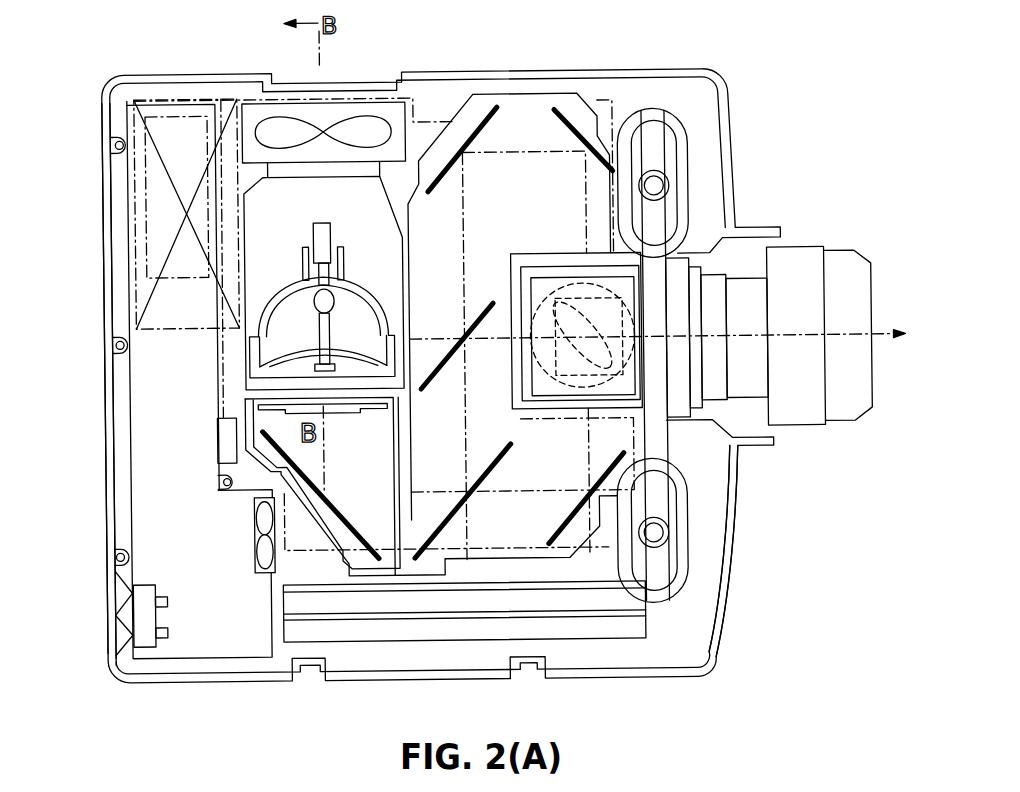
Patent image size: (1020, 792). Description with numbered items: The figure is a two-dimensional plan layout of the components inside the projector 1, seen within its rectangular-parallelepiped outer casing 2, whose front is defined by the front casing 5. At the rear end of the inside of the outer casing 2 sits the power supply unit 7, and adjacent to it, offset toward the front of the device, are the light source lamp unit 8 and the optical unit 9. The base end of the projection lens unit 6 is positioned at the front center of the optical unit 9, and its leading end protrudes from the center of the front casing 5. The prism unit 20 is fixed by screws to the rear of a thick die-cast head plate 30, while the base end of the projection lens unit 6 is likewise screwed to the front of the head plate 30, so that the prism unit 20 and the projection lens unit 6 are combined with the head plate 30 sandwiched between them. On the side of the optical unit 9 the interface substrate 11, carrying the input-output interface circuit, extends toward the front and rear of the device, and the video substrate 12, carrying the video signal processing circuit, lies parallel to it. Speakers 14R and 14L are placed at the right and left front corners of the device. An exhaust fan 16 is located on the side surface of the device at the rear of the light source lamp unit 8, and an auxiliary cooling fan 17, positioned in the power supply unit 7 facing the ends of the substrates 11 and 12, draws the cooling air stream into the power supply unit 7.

The projector 1 is at (738, 80).
The outer casing 2 is at (105, 223).
The front casing 5 is at (731, 506).
The projection lens unit 6 is at (802, 240).
The power supply unit 7 is at (174, 526).
The light source lamp unit 8 is at (378, 246).
The optical unit 9 is at (517, 95).
The interface substrate 11 is at (580, 637).
The video substrate 12 is at (460, 593).
The speaker 14R is at (690, 172).
The speaker 14L is at (693, 543).
The exhaust fan 16 is at (270, 120).
The auxiliary cooling fan 17 is at (254, 552).
The prism unit 20 is at (573, 385).
The head plate 30 is at (657, 428).